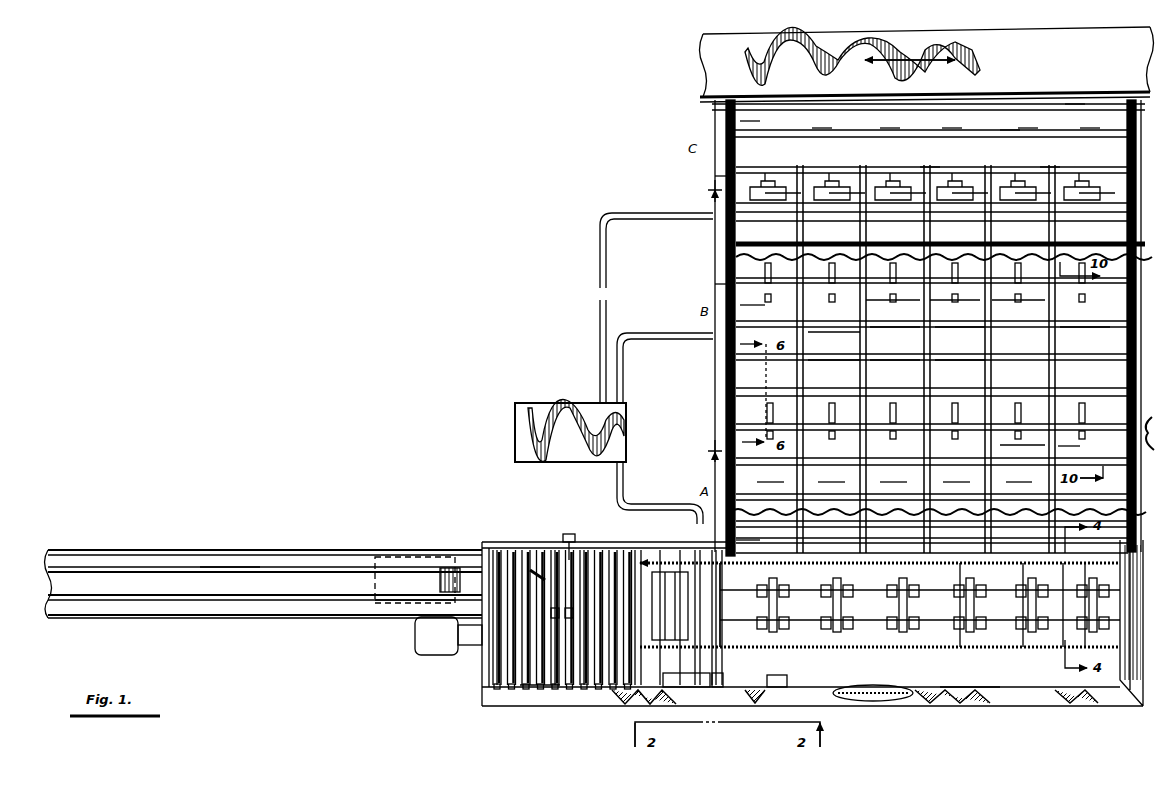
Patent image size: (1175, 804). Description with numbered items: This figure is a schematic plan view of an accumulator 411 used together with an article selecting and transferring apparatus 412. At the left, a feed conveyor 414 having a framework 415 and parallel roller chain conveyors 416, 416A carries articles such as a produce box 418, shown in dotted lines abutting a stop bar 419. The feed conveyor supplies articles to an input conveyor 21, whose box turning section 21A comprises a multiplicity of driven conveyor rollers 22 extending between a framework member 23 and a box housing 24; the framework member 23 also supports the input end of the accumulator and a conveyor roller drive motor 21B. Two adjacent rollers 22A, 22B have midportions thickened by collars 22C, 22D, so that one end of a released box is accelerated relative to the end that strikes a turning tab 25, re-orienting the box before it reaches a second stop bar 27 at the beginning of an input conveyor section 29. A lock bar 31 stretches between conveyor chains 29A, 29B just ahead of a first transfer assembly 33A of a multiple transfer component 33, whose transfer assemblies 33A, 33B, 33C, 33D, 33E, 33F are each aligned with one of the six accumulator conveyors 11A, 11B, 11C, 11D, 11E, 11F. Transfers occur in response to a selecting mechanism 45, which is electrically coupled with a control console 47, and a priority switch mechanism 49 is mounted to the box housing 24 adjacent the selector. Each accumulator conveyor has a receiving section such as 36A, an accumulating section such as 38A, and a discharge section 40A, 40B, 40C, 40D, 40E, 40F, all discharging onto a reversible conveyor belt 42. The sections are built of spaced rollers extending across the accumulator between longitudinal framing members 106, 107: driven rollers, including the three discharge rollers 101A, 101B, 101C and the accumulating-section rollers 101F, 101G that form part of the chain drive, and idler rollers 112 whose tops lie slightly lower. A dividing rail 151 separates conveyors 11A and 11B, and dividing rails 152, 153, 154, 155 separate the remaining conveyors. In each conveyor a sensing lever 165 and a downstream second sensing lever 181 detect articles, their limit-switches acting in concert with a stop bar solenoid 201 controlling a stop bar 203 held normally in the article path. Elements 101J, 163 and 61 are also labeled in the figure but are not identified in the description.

The reversible conveyor belt 42 is at (728, 56).
The discharge section 40A is at (766, 124).
The discharge section 40B is at (823, 127).
The discharge section 40C is at (890, 127).
The discharge section 40D is at (952, 127).
The discharge section 40E is at (1028, 127).
The discharge section 40F is at (1091, 126).
The driven roller 101A is at (933, 167).
The driven roller 101B is at (1010, 129).
The driven roller 101C is at (1072, 100).
The shelf rail 101J is at (1070, 210).
The second driven conveyor roller 101G is at (916, 365).
The first roller conveyor 101F is at (998, 430).
The longitudinal framing member 107 is at (1126, 144).
The longitudinal framing member 106 is at (728, 177).
The stop bar 203 is at (800, 185).
The stop bar solenoid 201 is at (848, 186).
The second sensing lever 181 is at (752, 270).
The accumulator 411 is at (707, 281).
The accumulating section 38A is at (757, 310).
The receiving section 36A is at (752, 545).
The dividing rail 152 is at (868, 305).
The dividing rail 153 is at (933, 305).
The dividing rail 154 is at (995, 305).
The dividing rail 151 is at (808, 337).
The dividing rail 155 is at (1058, 338).
The idler roller 112 is at (918, 318).
The sensing lever 165 is at (850, 392).
The compartment 163 is at (968, 392).
The accumulator conveyor 11A is at (768, 360).
The accumulator conveyor 11B is at (832, 360).
The accumulator conveyor 11C is at (894, 360).
The accumulator conveyor 11D is at (958, 360).
The accumulator conveyor 11E is at (1020, 360).
The accumulator conveyor 11F is at (1091, 360).
The control console 47 is at (533, 432).
The input conveyor 21 is at (527, 659).
The box turning section 21A is at (556, 672).
The conveyor roller drive motor 21B is at (428, 637).
The conveyor rollers 22 is at (540, 678).
The conveyor roller 22A is at (545, 680).
The conveyor roller 22B is at (570, 680).
The collar 22C is at (551, 613).
The collar 22D is at (569, 608).
The article selecting and transferring apparatus 412 is at (538, 575).
The turning tab 25 is at (572, 548).
The framework member 23 is at (642, 562).
The second stop bar 27 is at (660, 598).
The input conveyor section 29 is at (905, 652).
The conveyor chain 29A is at (785, 650).
The conveyor chain 29B is at (860, 566).
The lock bar 31 is at (720, 598).
The multiple transfer component 33 is at (873, 632).
The first transfer assembly 33A is at (768, 602).
The transfer assembly 33B is at (826, 606).
The transfer assembly 33C is at (908, 605).
The transfer assembly 33D is at (975, 605).
The transfer assembly 33E is at (1038, 605).
The transfer assembly 33F is at (1098, 605).
The selecting mechanism 45 is at (718, 687).
The priority switch mechanism 49 is at (772, 675).
The slot 61 is at (905, 696).
The box housing 24 is at (1000, 685).
The feed conveyor 414 is at (143, 583).
The framework 415 is at (122, 618).
The roller chain conveyor 416 is at (212, 600).
The roller chain conveyor 416A is at (232, 568).
The produce box 418 is at (375, 605).
The stop bar 419 is at (440, 577).